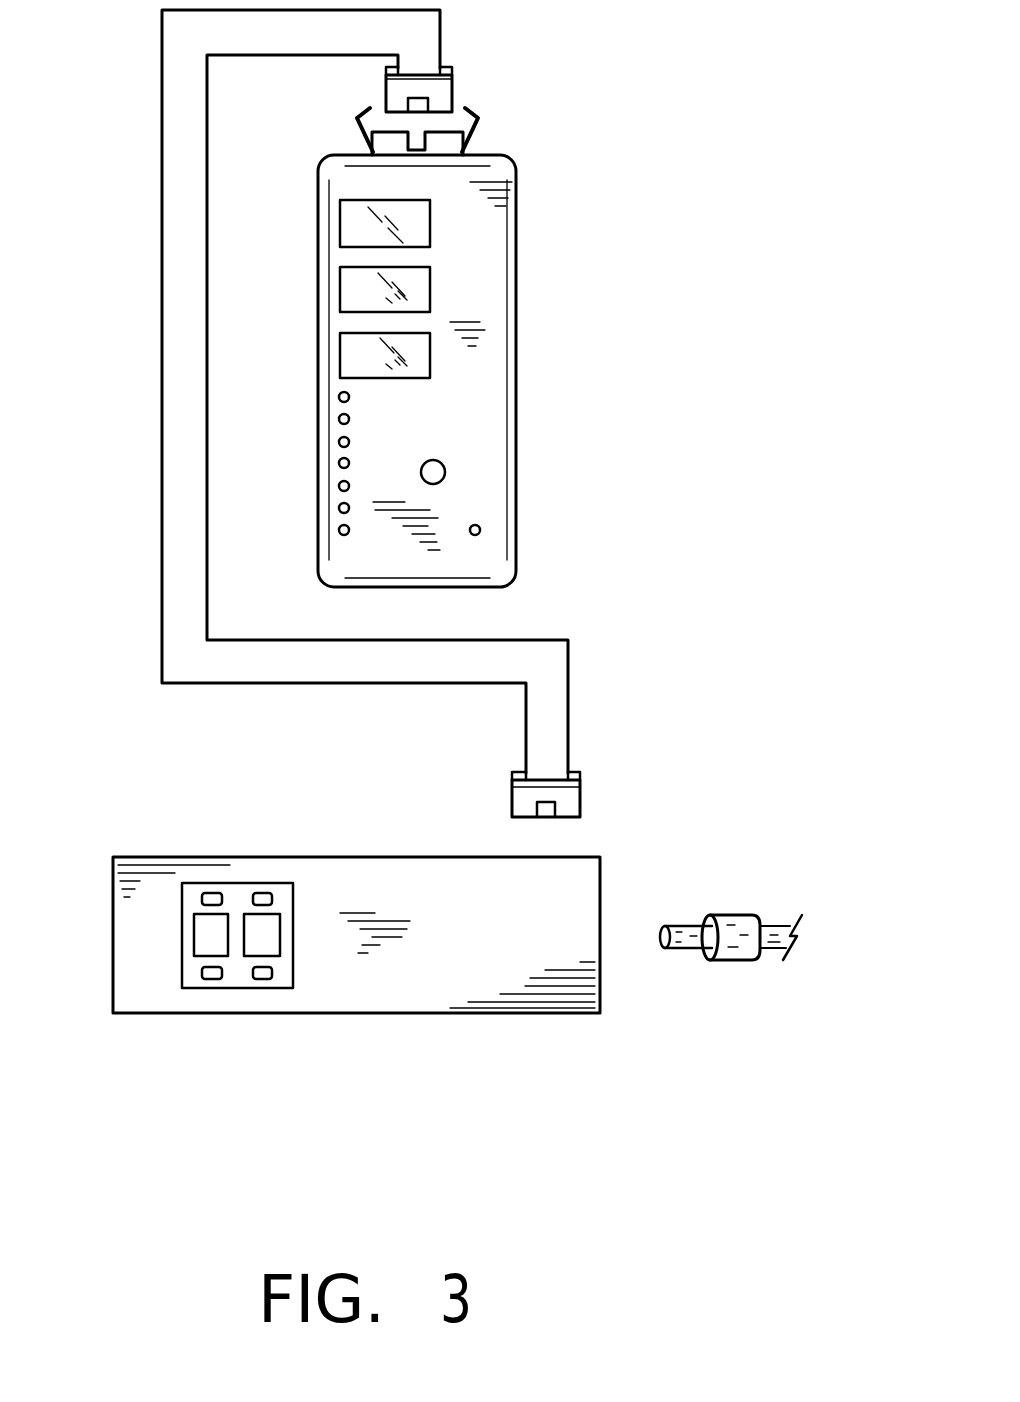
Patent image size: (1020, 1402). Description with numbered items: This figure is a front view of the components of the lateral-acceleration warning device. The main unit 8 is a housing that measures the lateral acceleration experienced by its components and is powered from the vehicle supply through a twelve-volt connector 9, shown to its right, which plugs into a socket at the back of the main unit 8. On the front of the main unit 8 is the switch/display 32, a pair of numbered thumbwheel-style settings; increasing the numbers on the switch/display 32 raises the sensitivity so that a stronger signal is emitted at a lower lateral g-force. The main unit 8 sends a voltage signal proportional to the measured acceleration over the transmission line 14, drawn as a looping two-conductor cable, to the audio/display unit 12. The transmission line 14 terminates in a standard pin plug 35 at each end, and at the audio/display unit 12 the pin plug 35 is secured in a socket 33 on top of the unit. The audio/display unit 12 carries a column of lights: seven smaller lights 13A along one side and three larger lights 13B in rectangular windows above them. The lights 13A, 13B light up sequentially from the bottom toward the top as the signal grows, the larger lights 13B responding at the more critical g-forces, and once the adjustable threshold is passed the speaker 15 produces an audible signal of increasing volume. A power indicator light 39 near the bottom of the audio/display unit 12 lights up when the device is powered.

The main unit 8 is at (490, 986).
The 12V connector 9 is at (773, 933).
The audio/display unit 12 is at (473, 370).
The smaller lights 13A is at (339, 419).
The larger lights 13B is at (355, 293).
The transmission line 14 is at (510, 657).
The speaker 15 is at (446, 465).
The switch/display 32 is at (237, 980).
The socket 33 is at (452, 128).
The pin plug 35 is at (438, 93).
The power indicator light 39 is at (481, 529).